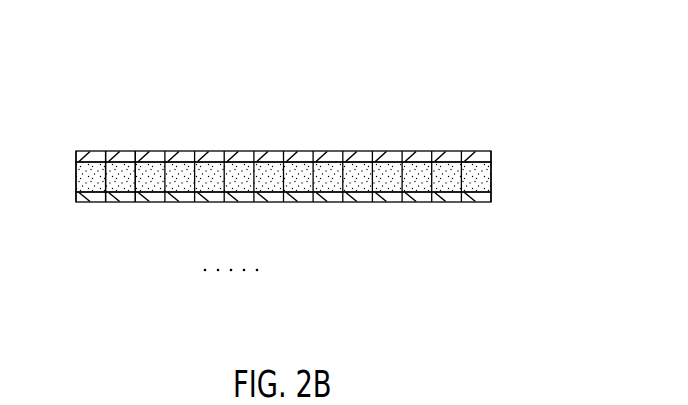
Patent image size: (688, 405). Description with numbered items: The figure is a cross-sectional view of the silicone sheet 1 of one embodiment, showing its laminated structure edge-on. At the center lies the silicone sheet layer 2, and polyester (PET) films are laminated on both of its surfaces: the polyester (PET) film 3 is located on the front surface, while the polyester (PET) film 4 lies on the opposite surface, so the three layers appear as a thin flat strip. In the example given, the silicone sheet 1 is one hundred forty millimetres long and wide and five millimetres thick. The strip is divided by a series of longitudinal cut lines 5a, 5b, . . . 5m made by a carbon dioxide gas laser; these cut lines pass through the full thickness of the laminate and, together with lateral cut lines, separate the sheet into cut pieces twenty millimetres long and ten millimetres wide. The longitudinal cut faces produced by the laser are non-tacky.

The silicone sheet 1 is at (312, 152).
The silicone sheet layer 2 is at (312, 177).
The polyester (PET) film 3 is at (312, 146).
The polyester (PET) film 4 is at (312, 206).
The longitudinal cut line 5a is at (95, 217).
The longitudinal cut line 5b is at (127, 217).
The longitudinal cut line 5m is at (472, 217).